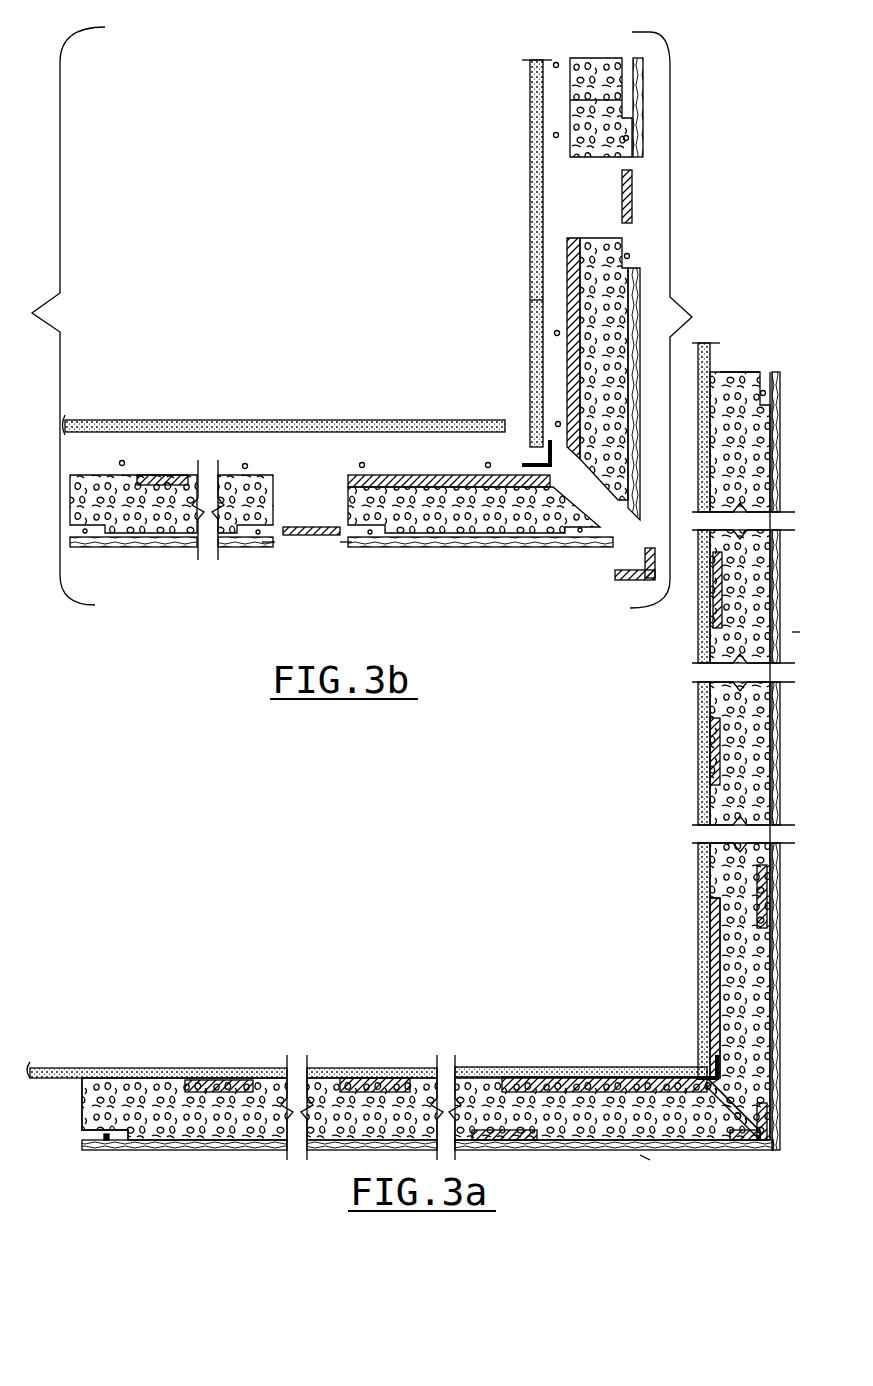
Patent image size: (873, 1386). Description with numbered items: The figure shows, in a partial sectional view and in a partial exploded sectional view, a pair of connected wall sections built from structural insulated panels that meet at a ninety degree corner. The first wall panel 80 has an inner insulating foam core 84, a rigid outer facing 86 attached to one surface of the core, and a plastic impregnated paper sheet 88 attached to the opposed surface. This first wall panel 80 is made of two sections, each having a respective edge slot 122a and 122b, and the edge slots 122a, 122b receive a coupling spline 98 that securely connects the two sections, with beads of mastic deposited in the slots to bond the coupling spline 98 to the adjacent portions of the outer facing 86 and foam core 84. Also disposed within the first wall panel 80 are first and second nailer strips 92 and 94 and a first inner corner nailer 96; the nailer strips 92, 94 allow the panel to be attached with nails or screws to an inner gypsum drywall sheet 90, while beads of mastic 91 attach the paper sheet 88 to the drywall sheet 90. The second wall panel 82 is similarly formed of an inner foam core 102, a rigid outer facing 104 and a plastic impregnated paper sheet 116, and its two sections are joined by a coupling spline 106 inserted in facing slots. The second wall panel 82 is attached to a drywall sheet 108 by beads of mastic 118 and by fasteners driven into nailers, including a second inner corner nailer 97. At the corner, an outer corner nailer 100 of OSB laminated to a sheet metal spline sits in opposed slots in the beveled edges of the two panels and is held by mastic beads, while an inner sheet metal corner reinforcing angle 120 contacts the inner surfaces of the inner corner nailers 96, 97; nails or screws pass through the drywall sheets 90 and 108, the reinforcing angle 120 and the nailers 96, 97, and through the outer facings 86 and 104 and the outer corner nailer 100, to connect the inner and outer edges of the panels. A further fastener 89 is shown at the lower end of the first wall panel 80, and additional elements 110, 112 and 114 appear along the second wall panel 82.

In FIG. 3b, the first wall panel 80 is at (152, 406).
In FIG. 3a, the first wall panel 80 is at (650, 1163).
In FIG. 3b, the second wall panel 82 is at (512, 300).
In FIG. 3a, the second wall panel 82 is at (800, 628).
In FIG. 3b, the inner insulating foam core 84 is at (272, 496).
In FIG. 3a, the inner insulating foam core 84 is at (160, 1120).
In FIG. 3b, the rigid outer facing 86 is at (165, 548).
In FIG. 3a, the rigid outer facing 86 is at (228, 1147).
In FIG. 3b, the plastic impregnated paper sheet 88 is at (115, 475).
In FIG. 3a, the plastic impregnated paper sheet 88 is at (73, 1082).
In FIG. 3a, the fastener 89 is at (98, 1137).
In FIG. 3b, the inner gypsum drywall sheet 90 is at (258, 418).
In FIG. 3a, the inner gypsum drywall sheet 90 is at (80, 1068).
In FIG. 3b, the beads of mastic 91 is at (486, 465).
In FIG. 3b, the first nailer strip 92 is at (172, 475).
In FIG. 3a, the first nailer strip 92 is at (220, 1078).
In FIG. 3a, the second nailer strip 94 is at (362, 1078).
In FIG. 3b, the first inner corner nailer 96 is at (347, 477).
In FIG. 3a, the first inner corner nailer 96 is at (593, 1077).
In FIG. 3b, the second inner corner nailer 97 is at (574, 250).
In FIG. 3a, the second inner corner nailer 97 is at (712, 958).
In FIG. 3b, the coupling spline 98 is at (302, 537).
In FIG. 3a, the coupling spline 98 is at (511, 1141).
In FIG. 3b, the outer corner nailer 100 is at (614, 576).
In FIG. 3a, the outer corner nailer 100 is at (762, 1141).
In FIG. 3b, the inner foam core 102 is at (588, 92).
In FIG. 3a, the inner foam core 102 is at (745, 768).
In FIG. 3b, the rigid outer facing 104 is at (633, 58).
In FIG. 3a, the rigid outer facing 104 is at (776, 806).
In FIG. 3b, the coupling spline 106 is at (622, 187).
In FIG. 3a, the coupling spline 106 is at (762, 892).
In FIG. 3b, the drywall sheet 108 is at (530, 232).
In FIG. 3a, the drywall sheet 108 is at (700, 705).
In FIG. 3a, the spline 110 is at (712, 760).
In FIG. 3a, the spline 112 is at (713, 596).
In FIG. 3a, the sheathing board 114 is at (776, 372).
In FIG. 3b, the plastic impregnated paper sheet 116 is at (570, 107).
In FIG. 3a, the plastic impregnated paper sheet 116 is at (728, 375).
In FIG. 3b, the beads of mastic 118 is at (556, 421).
In FIG. 3b, the inner sheet metal corner reinforcing angle 120 is at (525, 462).
In FIG. 3a, the inner sheet metal corner reinforcing angle 120 is at (705, 1070).
In FIG. 3b, the edge slot 122a is at (275, 545).
In FIG. 3b, the edge slot 122b is at (346, 545).